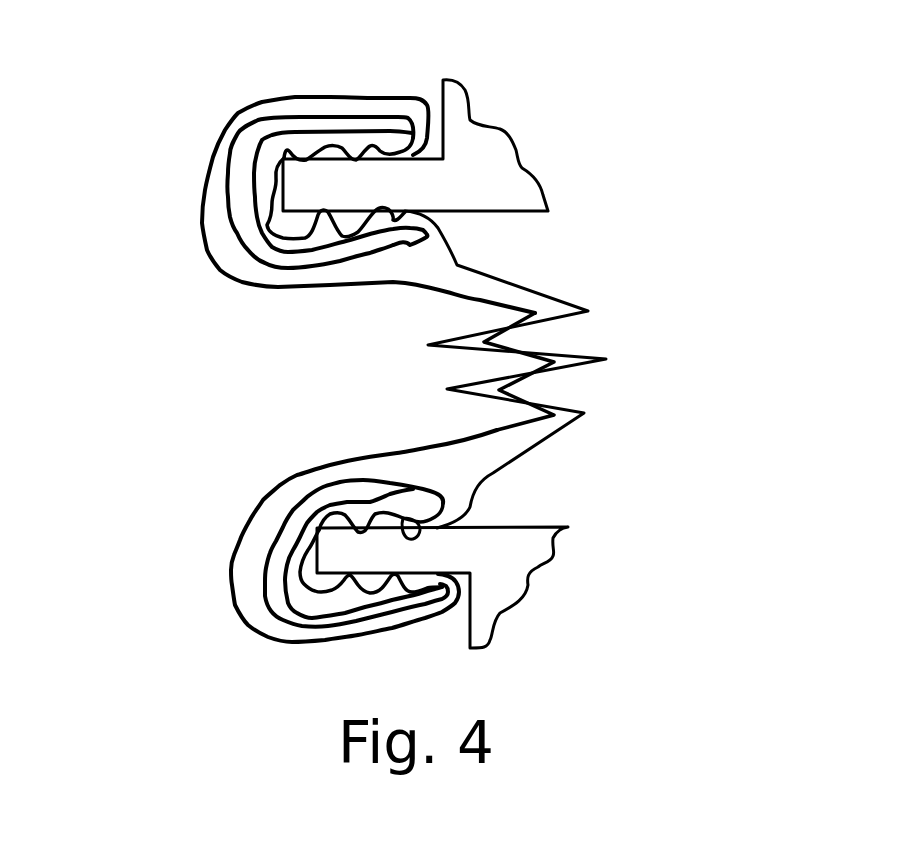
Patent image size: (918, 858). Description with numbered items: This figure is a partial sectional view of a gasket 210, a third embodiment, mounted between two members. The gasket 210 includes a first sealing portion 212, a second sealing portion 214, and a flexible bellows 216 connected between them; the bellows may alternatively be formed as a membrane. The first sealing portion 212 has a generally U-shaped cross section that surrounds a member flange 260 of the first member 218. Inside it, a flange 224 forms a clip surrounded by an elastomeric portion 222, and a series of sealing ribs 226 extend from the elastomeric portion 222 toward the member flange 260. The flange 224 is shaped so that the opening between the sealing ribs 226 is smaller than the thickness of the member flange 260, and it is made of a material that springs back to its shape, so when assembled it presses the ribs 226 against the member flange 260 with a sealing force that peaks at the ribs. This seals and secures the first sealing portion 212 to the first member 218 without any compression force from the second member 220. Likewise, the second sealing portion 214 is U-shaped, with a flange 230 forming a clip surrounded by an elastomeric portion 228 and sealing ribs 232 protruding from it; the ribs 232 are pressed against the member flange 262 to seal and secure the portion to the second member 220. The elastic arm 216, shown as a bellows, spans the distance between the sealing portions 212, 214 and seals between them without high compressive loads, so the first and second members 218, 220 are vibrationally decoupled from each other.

The gasket 210 is at (190, 127).
The first sealing portion 212 is at (143, 196).
The second sealing portion 214 is at (137, 541).
The flexible bellows 216 is at (586, 356).
The first member 218 is at (514, 146).
The second member 220 is at (543, 564).
The elastomeric portion 222 is at (308, 97).
The flange 224 is at (343, 117).
The sealing ribs 226 is at (307, 152).
The elastomeric portion 228 is at (263, 497).
The flange 230 is at (282, 564).
The sealing ribs 232 is at (407, 528).
The member flange 260 is at (302, 212).
The member flange 262 is at (317, 575).